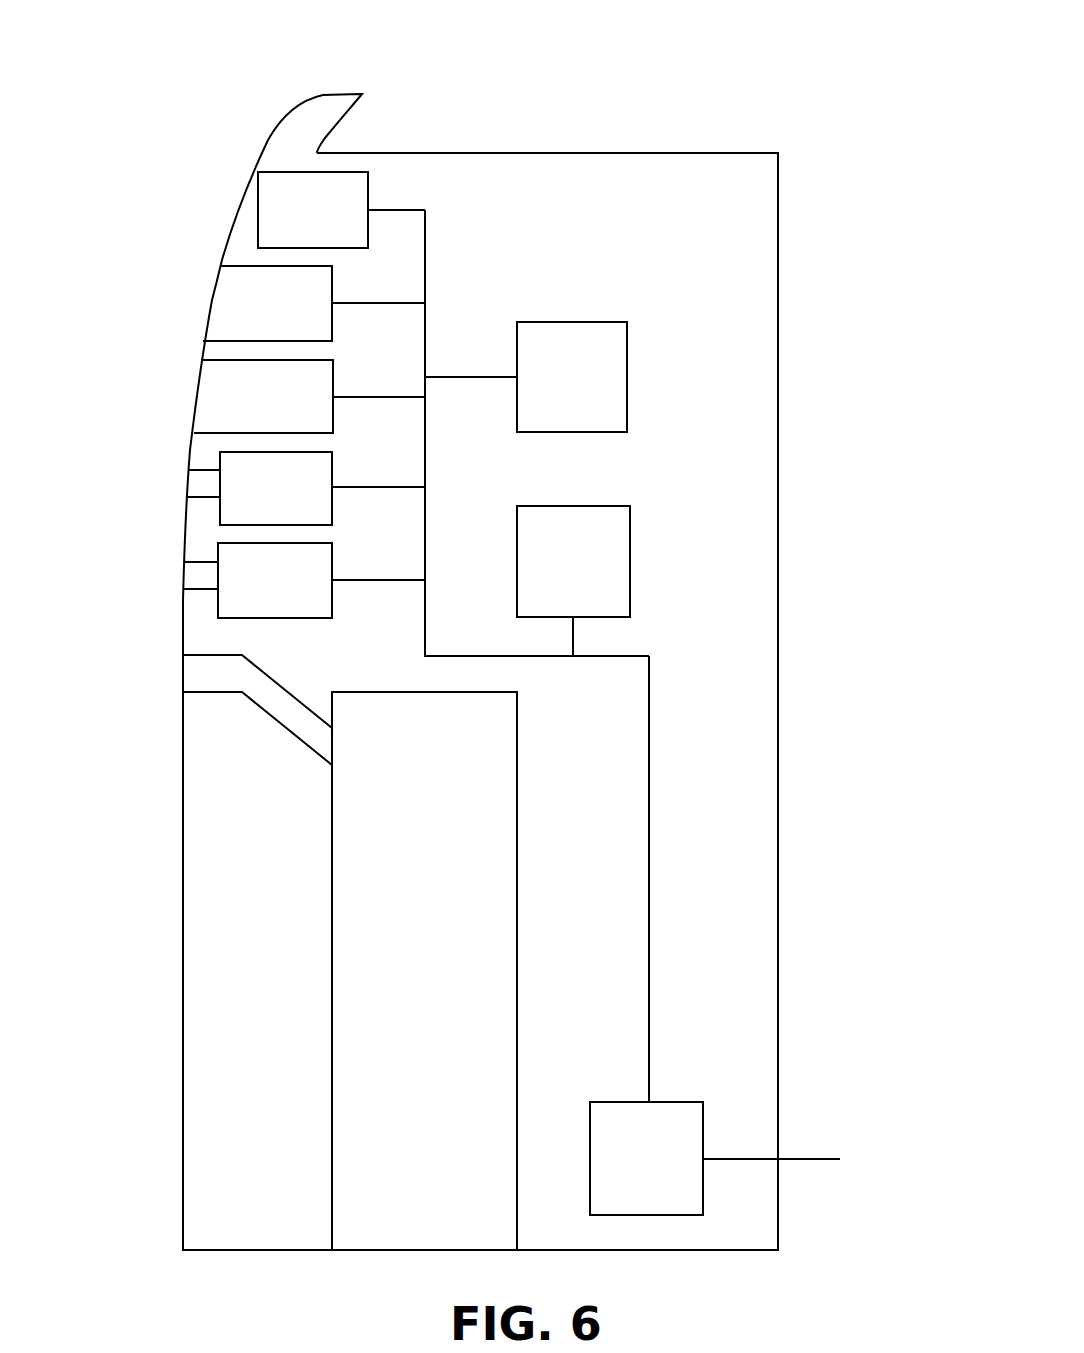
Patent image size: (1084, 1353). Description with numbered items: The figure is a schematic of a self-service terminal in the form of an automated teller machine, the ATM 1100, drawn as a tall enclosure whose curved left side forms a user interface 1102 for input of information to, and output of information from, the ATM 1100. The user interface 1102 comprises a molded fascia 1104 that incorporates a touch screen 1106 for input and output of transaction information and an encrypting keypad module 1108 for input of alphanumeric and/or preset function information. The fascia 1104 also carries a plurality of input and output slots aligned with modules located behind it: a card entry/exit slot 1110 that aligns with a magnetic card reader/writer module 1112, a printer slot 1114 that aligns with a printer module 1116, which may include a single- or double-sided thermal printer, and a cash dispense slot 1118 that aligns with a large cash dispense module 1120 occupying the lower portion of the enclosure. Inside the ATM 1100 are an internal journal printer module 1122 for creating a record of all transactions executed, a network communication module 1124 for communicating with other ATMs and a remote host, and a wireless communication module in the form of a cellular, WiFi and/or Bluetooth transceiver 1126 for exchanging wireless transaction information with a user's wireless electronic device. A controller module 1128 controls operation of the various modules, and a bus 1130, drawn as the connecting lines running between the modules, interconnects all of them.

The automated teller machine 1100 is at (732, 57).
The user interface 1102 is at (187, 338).
The molded fascia 1104 is at (227, 192).
The touch screen 1106 is at (234, 317).
The encrypting keypad module 1108 is at (232, 410).
The card entry/exit slot 1110 is at (178, 480).
The magnetic card reader/writer module 1112 is at (243, 500).
The printer slot 1114 is at (173, 573).
The printer module 1116 is at (243, 594).
The cash dispense slot 1118 is at (173, 670).
The cash dispense module 1120 is at (396, 976).
The internal journal printer module 1122 is at (539, 392).
The network communication module 1124 is at (613, 1175).
The wireless communication module 1126 is at (280, 223).
The controller module 1128 is at (541, 577).
The bus 1130 is at (650, 860).